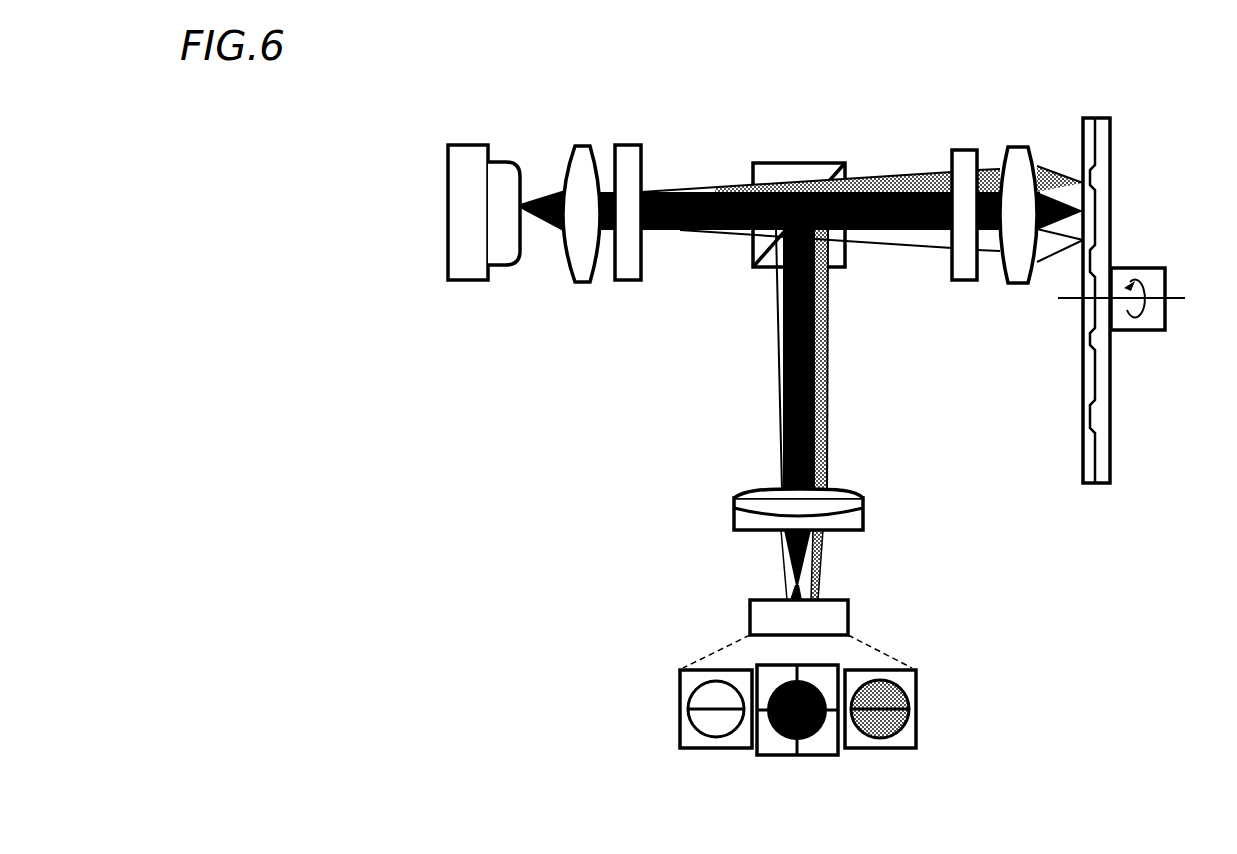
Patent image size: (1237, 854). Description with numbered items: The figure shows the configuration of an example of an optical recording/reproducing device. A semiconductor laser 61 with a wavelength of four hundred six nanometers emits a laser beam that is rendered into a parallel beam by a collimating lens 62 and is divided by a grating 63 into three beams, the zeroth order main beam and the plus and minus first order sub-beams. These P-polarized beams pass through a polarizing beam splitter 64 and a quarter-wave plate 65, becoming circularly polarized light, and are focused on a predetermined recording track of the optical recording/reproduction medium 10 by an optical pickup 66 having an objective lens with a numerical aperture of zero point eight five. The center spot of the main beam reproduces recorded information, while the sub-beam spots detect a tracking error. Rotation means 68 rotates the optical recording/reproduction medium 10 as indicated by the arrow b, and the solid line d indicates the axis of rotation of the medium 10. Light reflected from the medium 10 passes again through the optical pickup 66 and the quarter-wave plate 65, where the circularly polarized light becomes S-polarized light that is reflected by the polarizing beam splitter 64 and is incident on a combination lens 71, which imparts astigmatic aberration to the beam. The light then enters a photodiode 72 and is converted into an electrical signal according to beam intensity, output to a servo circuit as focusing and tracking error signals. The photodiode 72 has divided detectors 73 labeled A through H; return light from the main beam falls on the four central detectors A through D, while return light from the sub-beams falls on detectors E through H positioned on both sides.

The optical recording/reproduction medium 10 is at (1097, 118).
The semiconductor laser 61 is at (448, 200).
The collimating lens 62 is at (580, 146).
The grating 63 is at (627, 145).
The polarizing beam splitter 64 is at (775, 163).
The ¼-wave plate 65 is at (957, 150).
The optical pickup 66 is at (1018, 147).
The rotation means 68 is at (1165, 282).
The combination lens 71 is at (863, 505).
The photodiode 72 is at (848, 613).
The divided detectors 73 is at (916, 703).
The arrow b is at (1143, 290).
The axis of rotation d is at (1175, 300).